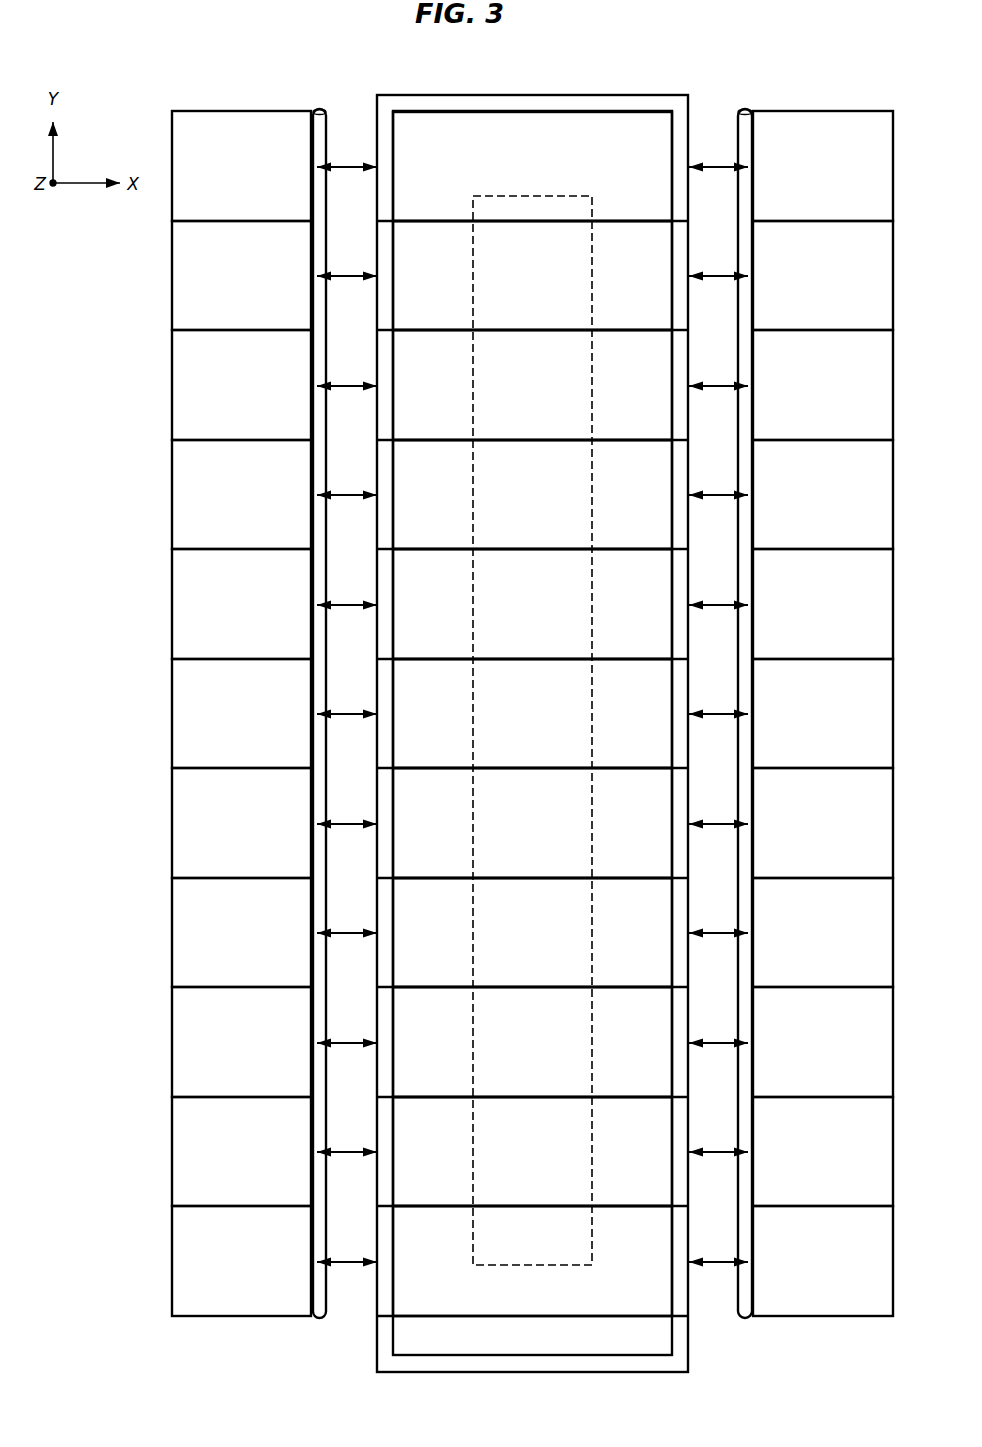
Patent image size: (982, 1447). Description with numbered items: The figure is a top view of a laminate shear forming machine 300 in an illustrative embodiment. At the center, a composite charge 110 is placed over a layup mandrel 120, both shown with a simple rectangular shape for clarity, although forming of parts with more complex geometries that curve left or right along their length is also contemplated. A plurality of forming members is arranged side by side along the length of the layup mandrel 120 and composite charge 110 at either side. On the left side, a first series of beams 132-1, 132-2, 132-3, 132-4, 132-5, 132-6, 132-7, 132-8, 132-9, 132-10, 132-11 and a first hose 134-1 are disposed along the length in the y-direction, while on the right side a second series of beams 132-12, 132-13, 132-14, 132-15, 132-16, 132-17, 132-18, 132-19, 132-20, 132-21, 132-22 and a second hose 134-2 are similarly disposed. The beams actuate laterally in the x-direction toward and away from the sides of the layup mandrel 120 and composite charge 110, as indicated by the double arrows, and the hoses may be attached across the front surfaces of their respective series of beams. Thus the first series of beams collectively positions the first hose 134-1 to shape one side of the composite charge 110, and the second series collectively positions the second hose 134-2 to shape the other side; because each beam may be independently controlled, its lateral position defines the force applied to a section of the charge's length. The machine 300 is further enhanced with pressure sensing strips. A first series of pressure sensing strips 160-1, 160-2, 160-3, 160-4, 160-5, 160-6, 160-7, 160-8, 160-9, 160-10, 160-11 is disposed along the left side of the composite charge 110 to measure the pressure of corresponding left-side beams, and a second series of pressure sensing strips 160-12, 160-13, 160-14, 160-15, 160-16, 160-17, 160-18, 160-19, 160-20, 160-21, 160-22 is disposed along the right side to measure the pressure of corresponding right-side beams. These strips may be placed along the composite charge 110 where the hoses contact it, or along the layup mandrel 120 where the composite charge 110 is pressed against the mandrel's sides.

The laminate shear forming machine 300 is at (803, 51).
The composite charge 110 is at (583, 136).
The layup mandrel 120 is at (542, 206).
The first hose 134-1 is at (317, 1324).
The second hose 134-2 is at (745, 1324).
The beam 132-1 is at (216, 1272).
The beam 132-2 is at (216, 1163).
The beam 132-3 is at (216, 1053).
The beam 132-4 is at (216, 944).
The beam 132-5 is at (216, 834).
The beam 132-6 is at (216, 725).
The beam 132-7 is at (216, 615).
The beam 132-8 is at (216, 506).
The beam 132-9 is at (216, 396).
The beam 132-10 is at (211, 287).
The beam 132-11 is at (211, 177).
The beam 132-12 is at (823, 1261).
The beam 132-13 is at (823, 1151).
The beam 132-14 is at (823, 1042).
The beam 132-15 is at (823, 932).
The beam 132-16 is at (823, 823).
The beam 132-17 is at (823, 713).
The beam 132-18 is at (823, 604).
The beam 132-19 is at (823, 494).
The beam 132-20 is at (823, 385).
The beam 132-21 is at (823, 275).
The beam 132-22 is at (823, 166).
The pressure sensing strip 160-1 is at (430, 1246).
The pressure sensing strip 160-2 is at (430, 1137).
The pressure sensing strip 160-3 is at (430, 1027).
The pressure sensing strip 160-4 is at (430, 918).
The pressure sensing strip 160-5 is at (430, 808).
The pressure sensing strip 160-6 is at (430, 699).
The pressure sensing strip 160-7 is at (430, 589).
The pressure sensing strip 160-8 is at (430, 480).
The pressure sensing strip 160-9 is at (430, 370).
The pressure sensing strip 160-10 is at (430, 261).
The pressure sensing strip 160-11 is at (430, 151).
The pressure sensing strip 160-12 is at (672, 1272).
The pressure sensing strip 160-13 is at (672, 1163).
The pressure sensing strip 160-14 is at (672, 1053).
The pressure sensing strip 160-15 is at (672, 944).
The pressure sensing strip 160-16 is at (672, 834).
The pressure sensing strip 160-17 is at (672, 725).
The pressure sensing strip 160-18 is at (672, 615).
The pressure sensing strip 160-19 is at (672, 506).
The pressure sensing strip 160-20 is at (672, 396).
The pressure sensing strip 160-21 is at (672, 287).
The pressure sensing strip 160-22 is at (672, 177).